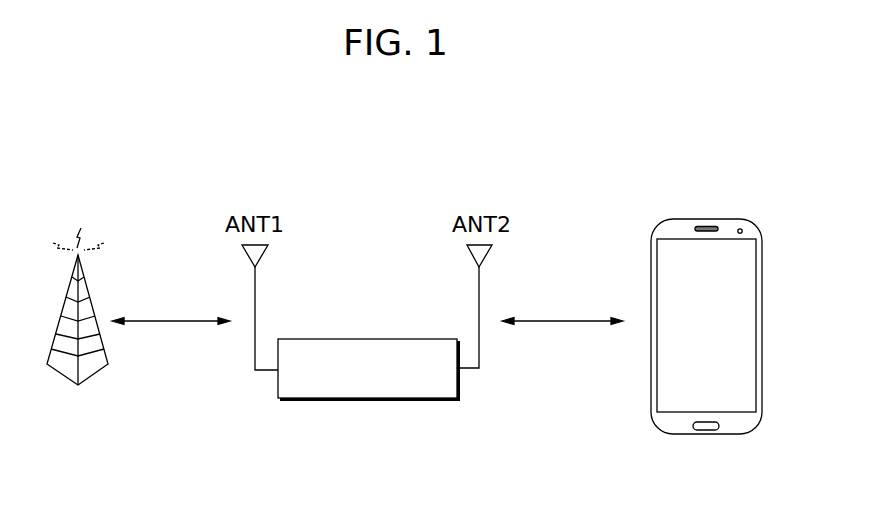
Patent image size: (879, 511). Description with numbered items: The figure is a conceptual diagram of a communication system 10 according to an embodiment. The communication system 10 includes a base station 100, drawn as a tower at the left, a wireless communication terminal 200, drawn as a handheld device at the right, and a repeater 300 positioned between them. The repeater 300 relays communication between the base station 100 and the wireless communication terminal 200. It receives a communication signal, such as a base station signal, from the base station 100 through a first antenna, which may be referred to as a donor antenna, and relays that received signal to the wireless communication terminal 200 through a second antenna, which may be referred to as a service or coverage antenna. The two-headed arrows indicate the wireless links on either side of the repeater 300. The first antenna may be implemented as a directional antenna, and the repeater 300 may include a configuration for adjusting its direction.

The communication system 10 is at (705, 134).
The base station 100 is at (87, 288).
The wireless communication terminal 200 is at (723, 219).
The repeater 300 is at (371, 338).